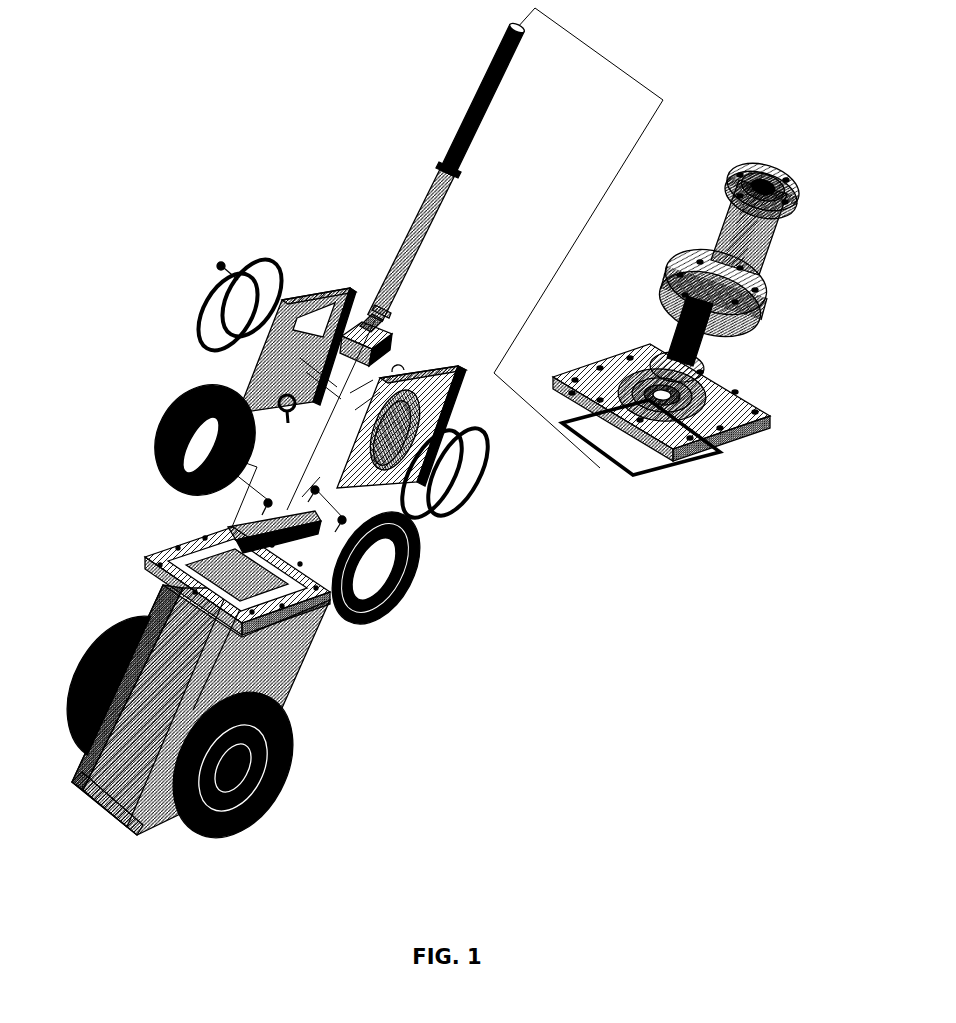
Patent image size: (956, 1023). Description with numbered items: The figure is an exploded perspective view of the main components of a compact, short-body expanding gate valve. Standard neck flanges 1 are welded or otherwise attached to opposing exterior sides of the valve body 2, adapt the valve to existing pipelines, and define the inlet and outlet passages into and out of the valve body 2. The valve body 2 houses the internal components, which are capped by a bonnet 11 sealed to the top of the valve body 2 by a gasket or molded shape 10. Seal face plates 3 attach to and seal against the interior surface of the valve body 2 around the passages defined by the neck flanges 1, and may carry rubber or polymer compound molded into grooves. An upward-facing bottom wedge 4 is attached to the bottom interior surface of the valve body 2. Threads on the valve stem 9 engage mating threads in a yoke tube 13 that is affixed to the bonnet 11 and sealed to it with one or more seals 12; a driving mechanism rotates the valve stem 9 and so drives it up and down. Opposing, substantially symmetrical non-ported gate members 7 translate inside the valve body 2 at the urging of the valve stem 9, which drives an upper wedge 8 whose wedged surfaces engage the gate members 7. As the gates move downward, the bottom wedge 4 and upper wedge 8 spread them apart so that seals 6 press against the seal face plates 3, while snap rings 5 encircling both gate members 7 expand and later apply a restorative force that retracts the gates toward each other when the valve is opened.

The neck flanges 1 is at (290, 740).
The valve body 2 is at (300, 662).
The seal face plates 3 is at (398, 585).
The bottom wedge 4 is at (226, 529).
The snap rings 5 is at (288, 426).
The seals 6 is at (243, 270).
The gate members 7 is at (459, 366).
The upper wedge 8 is at (400, 340).
The valve stem 9 is at (457, 190).
The gasket 10 is at (677, 487).
The bonnet 11 is at (750, 392).
The seals 12 is at (677, 322).
The yoke tube 13 is at (763, 255).